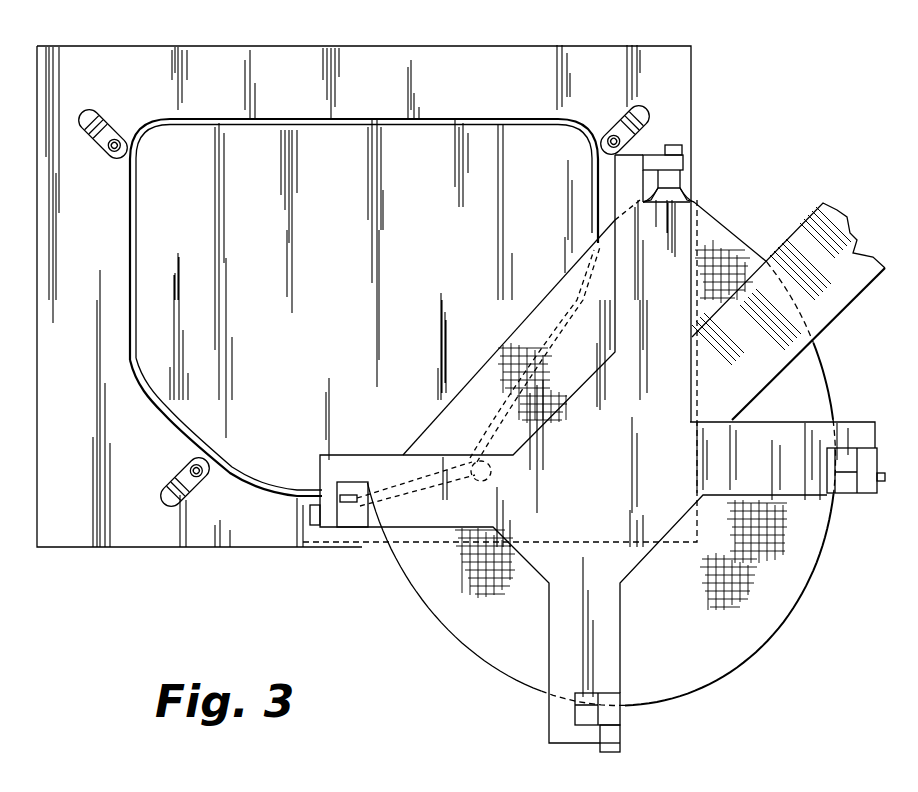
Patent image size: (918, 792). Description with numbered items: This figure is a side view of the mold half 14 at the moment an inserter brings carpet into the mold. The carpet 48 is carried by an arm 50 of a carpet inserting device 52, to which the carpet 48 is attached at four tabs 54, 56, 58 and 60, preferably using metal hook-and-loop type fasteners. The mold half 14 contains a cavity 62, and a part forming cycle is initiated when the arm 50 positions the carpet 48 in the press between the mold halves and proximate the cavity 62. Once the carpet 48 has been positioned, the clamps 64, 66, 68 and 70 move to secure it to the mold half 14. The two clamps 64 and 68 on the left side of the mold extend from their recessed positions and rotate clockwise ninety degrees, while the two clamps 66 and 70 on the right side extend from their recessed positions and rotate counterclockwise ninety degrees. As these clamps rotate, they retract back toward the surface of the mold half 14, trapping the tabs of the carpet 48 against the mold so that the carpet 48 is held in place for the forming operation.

The mold half 14 is at (516, 46).
The carpet 48 is at (823, 382).
The arm 50 is at (662, 492).
The carpet inserting device 52 is at (807, 215).
The tab 54 is at (680, 158).
The tab 56 is at (867, 488).
The tab 58 is at (616, 730).
The tab 60 is at (323, 550).
The cavity 62 is at (353, 137).
The clamp 64 is at (100, 120).
The clamp 66 is at (654, 120).
The clamp 68 is at (182, 502).
The clamp 70 is at (487, 482).